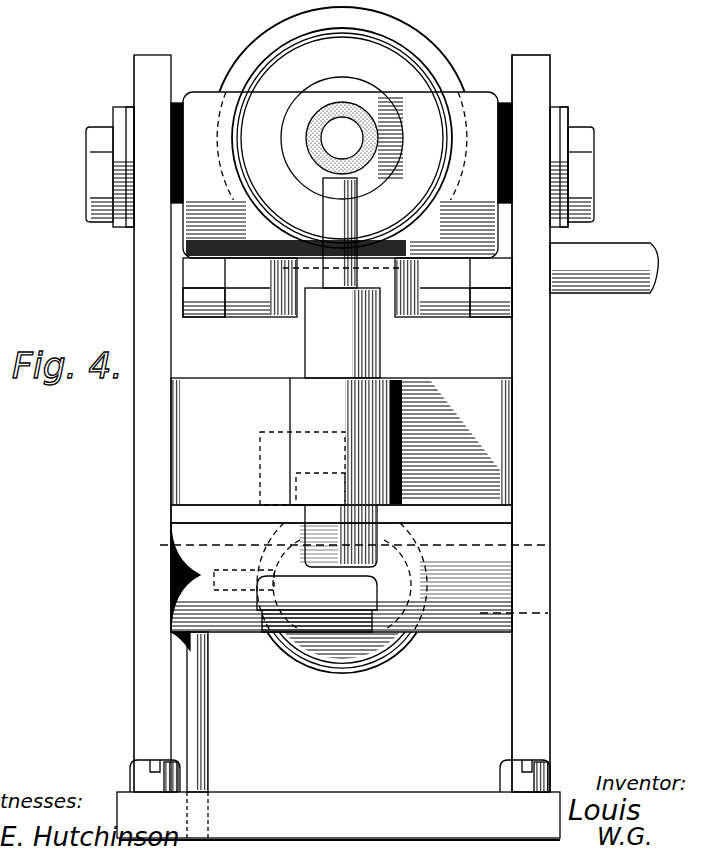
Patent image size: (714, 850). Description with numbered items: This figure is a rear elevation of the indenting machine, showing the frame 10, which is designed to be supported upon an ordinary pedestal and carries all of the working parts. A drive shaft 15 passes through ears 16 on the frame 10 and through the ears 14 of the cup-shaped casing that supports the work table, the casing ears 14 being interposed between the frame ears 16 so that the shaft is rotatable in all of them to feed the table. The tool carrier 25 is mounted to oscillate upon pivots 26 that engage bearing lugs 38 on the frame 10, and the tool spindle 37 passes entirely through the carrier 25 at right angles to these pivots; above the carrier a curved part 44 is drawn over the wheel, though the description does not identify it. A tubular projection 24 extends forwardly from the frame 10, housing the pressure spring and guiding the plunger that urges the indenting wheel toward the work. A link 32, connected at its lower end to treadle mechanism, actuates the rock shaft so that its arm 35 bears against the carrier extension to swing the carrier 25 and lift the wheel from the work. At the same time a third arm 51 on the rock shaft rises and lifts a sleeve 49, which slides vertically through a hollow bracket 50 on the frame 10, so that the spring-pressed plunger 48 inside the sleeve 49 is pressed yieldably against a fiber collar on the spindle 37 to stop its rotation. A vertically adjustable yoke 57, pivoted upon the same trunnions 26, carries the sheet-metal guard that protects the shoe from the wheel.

The frame 10 is at (134, 458).
The ears 14 is at (251, 318).
The drive shaft 15 is at (602, 260).
The ears 16 is at (202, 318).
The tubular projection 24 is at (348, 652).
The tool carrier 25 is at (464, 100).
The pivots 26 is at (98, 172).
The link 32 is at (208, 712).
The arm 35 is at (260, 463).
The tool spindle 37 is at (342, 138).
The bearing lugs 38 is at (134, 267).
The guard 44 is at (428, 66).
The spring-pressed plunger 48 is at (340, 208).
The sleeve 49 is at (342, 427).
The hollow bracket 50 is at (341, 450).
The third arm 51 is at (317, 604).
The yoke 57 is at (122, 110).